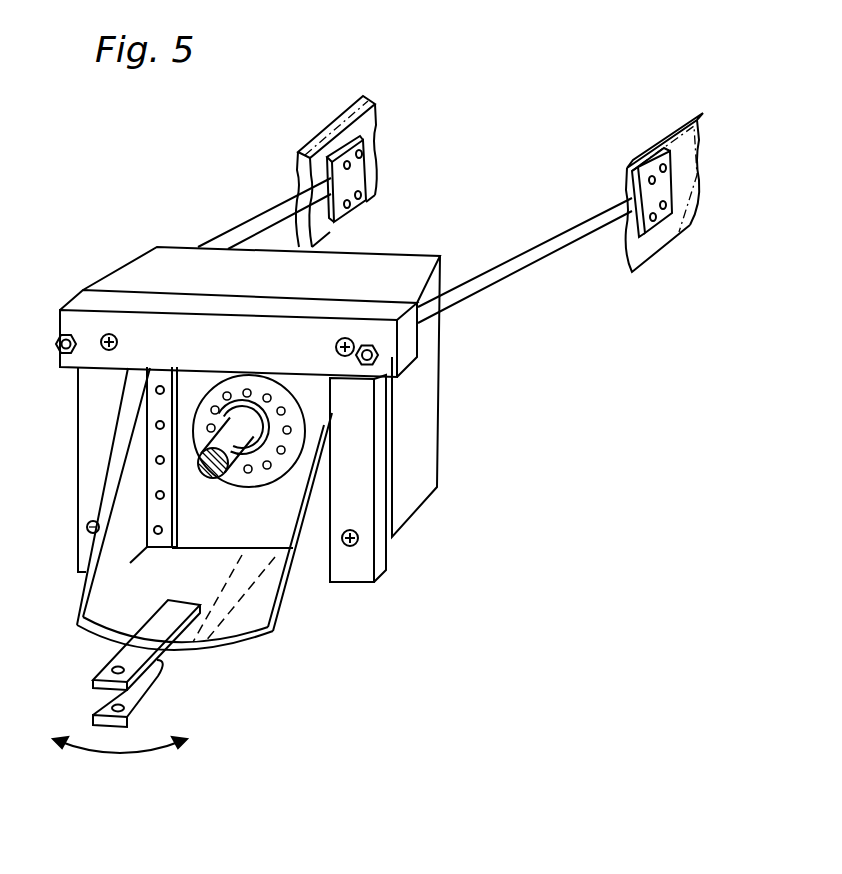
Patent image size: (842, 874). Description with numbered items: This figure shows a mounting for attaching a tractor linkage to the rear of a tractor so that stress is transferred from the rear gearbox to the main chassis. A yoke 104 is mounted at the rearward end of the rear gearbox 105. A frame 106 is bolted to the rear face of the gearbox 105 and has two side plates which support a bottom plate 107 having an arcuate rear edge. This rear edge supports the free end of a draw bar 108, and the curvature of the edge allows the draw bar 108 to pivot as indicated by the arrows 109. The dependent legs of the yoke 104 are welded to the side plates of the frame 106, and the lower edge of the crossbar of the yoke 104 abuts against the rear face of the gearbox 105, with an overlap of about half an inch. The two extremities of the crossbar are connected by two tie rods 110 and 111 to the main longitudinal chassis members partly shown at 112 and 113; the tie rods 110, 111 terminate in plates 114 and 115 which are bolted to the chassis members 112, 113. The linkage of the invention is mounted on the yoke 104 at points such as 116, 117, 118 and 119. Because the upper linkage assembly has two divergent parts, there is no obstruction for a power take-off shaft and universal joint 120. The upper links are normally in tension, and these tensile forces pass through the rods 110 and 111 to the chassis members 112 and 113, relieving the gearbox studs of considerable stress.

The yoke 104 is at (403, 372).
The rear gearbox 105 is at (418, 447).
The frame 106 is at (303, 581).
The bottom plate 107 is at (246, 617).
The draw bar 108 is at (162, 687).
The arrows 109 is at (120, 754).
The tie rod 110 is at (250, 228).
The tie rod 111 is at (511, 272).
The main longitudinal chassis member 112 is at (352, 103).
The main longitudinal chassis member 113 is at (676, 126).
The plate 114 is at (371, 163).
The plate 115 is at (633, 168).
The mounting point 116 is at (110, 333).
The mounting point 117 is at (347, 338).
The mounting point 118 is at (87, 527).
The mounting point 119 is at (358, 538).
The shaft and universal joint 120 is at (243, 447).